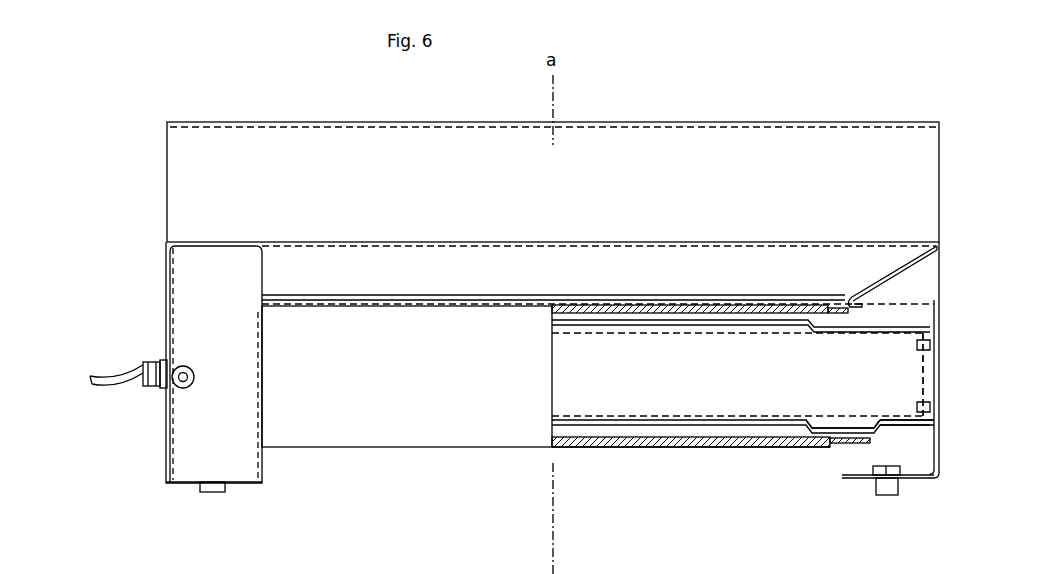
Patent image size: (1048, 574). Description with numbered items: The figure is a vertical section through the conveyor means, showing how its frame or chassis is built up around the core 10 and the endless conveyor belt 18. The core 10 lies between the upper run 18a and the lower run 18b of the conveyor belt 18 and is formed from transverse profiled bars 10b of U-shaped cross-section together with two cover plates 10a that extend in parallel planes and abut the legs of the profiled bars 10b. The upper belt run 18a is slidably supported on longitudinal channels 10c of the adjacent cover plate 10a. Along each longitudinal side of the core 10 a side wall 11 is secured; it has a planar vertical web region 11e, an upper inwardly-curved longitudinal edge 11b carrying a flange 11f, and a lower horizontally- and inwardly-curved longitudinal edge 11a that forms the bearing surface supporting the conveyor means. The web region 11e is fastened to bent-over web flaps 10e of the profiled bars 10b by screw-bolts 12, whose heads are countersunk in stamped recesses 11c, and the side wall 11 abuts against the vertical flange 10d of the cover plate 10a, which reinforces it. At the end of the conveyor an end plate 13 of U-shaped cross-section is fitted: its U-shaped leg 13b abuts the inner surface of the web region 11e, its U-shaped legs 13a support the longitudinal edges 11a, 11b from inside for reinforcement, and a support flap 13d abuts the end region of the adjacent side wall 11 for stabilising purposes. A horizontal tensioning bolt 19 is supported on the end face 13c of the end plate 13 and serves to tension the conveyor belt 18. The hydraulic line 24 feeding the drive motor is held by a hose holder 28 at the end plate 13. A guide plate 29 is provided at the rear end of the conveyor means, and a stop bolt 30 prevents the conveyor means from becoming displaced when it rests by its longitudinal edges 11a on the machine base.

The guide plate 29 is at (922, 171).
The side wall 11 is at (955, 473).
The lower longitudinal edge 11a is at (860, 481).
The upper longitudinal edge 11b is at (886, 276).
The stamped recess 11c is at (936, 403).
The web region 11e is at (940, 441).
The flange 11f is at (846, 297).
The core 10 is at (660, 448).
The cover plate 10a is at (722, 448).
The profiled bar 10b is at (592, 376).
The longitudinal channel 10c is at (815, 450).
The vertical flange 10d is at (940, 304).
The web flap 10e is at (936, 366).
The screw-bolt 12 is at (936, 346).
The end plate 13 is at (186, 497).
The U-shaped leg 13a is at (262, 373).
The U-shaped leg 13b is at (172, 298).
The end face 13c is at (243, 455).
The support flap 13d is at (171, 386).
The endless conveyor belt 18 is at (628, 463).
The upper belt run 18a is at (665, 311).
The lower belt run 18b is at (587, 450).
The tensioning bolt 19 is at (188, 368).
The hydraulic line 24 is at (95, 376).
The hose holder 28 is at (150, 366).
The stop bolt 30 is at (210, 492).